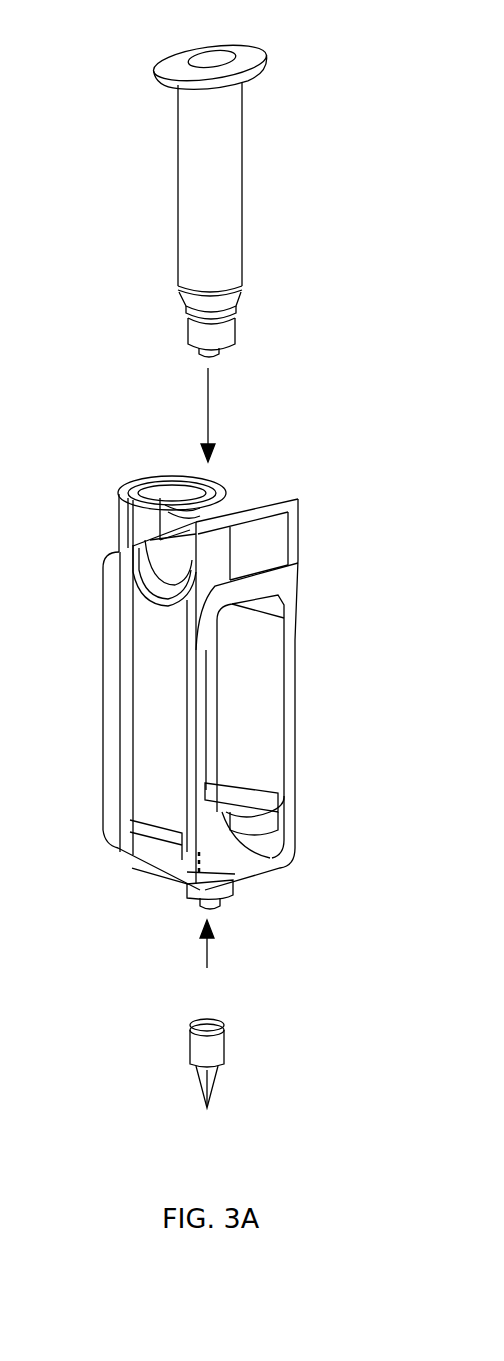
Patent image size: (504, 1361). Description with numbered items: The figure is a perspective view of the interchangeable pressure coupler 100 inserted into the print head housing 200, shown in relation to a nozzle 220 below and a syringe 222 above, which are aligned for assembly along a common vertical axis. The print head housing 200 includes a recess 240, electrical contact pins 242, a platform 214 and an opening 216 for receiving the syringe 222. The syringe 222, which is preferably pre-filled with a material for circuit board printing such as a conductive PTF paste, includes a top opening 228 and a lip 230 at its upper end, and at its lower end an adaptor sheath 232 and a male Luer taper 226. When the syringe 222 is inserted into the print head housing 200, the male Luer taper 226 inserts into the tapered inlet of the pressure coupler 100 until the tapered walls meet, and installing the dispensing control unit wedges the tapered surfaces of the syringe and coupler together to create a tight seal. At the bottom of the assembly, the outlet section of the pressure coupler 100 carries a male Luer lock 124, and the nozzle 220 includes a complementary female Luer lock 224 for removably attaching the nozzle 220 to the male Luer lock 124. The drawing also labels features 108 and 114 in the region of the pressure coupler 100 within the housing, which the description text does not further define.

The pressure coupler 100 is at (236, 804).
The cartridge housing bar 108 is at (215, 786).
The cartridge opening 114 is at (220, 822).
The male Luer lock connection 124 is at (228, 900).
The print head housing 200 is at (200, 687).
The platform 214 is at (160, 560).
The opening 216 is at (170, 530).
The nozzle 220 is at (251, 1045).
The syringe 222 is at (182, 208).
The female Luer lock 224 is at (222, 1034).
The male Luer taper 226 is at (240, 330).
The top opening 228 is at (208, 62).
The lip 230 is at (163, 70).
The adaptor sheath 232 is at (208, 355).
The recess 240 is at (228, 505).
The electrical contact pins 242 is at (165, 481).